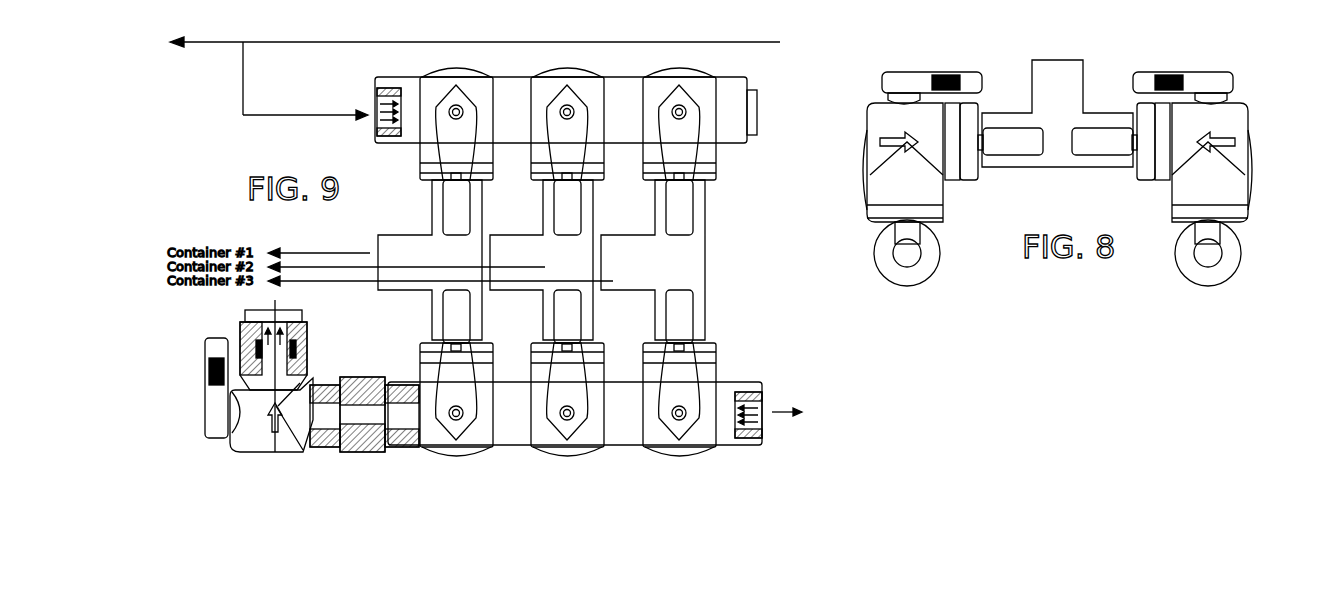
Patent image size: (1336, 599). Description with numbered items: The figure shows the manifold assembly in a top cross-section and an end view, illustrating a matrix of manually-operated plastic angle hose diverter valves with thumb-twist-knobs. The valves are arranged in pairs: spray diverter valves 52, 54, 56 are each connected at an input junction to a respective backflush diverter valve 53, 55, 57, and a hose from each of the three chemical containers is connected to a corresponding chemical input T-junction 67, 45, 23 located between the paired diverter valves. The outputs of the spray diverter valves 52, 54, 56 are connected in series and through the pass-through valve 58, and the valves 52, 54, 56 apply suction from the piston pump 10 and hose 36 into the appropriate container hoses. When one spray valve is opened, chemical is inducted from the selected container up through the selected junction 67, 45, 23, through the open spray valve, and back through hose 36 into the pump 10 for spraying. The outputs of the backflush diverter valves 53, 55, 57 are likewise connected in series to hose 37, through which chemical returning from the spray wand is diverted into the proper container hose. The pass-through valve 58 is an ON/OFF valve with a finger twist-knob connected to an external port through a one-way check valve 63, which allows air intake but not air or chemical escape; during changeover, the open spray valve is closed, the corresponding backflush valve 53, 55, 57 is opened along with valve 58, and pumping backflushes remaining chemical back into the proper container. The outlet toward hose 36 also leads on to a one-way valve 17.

In FIG. 9, the piston pump 10 is at (475, 68).
In FIG. 9, the hose 37 is at (305, 114).
In FIG. 9, the hose 36 is at (829, 403).
In FIG. 9, the one-way valve 17 is at (860, 433).
In FIG. 9, the diverter valve 57 is at (410, 152).
In FIG. 9, the diverter valve 55 is at (528, 166).
In FIG. 9, the diverter valve 53 is at (640, 166).
In FIG. 8, the diverter valve 53 is at (1222, 190).
In FIG. 9, the diverter valve 56 is at (412, 354).
In FIG. 9, the diverter valve 54 is at (531, 339).
In FIG. 9, the diverter valve 52 is at (648, 339).
In FIG. 8, the diverter valve 52 is at (920, 190).
In FIG. 9, the chemical input junction 67 is at (459, 258).
In FIG. 9, the chemical input junction 45 is at (580, 258).
In FIG. 9, the chemical input junction 23 is at (687, 258).
In FIG. 8, the chemical input junction 23 is at (1067, 107).
In FIG. 9, the pass-through valve 58 is at (245, 462).
In FIG. 9, the one-way check valve 63 is at (307, 313).